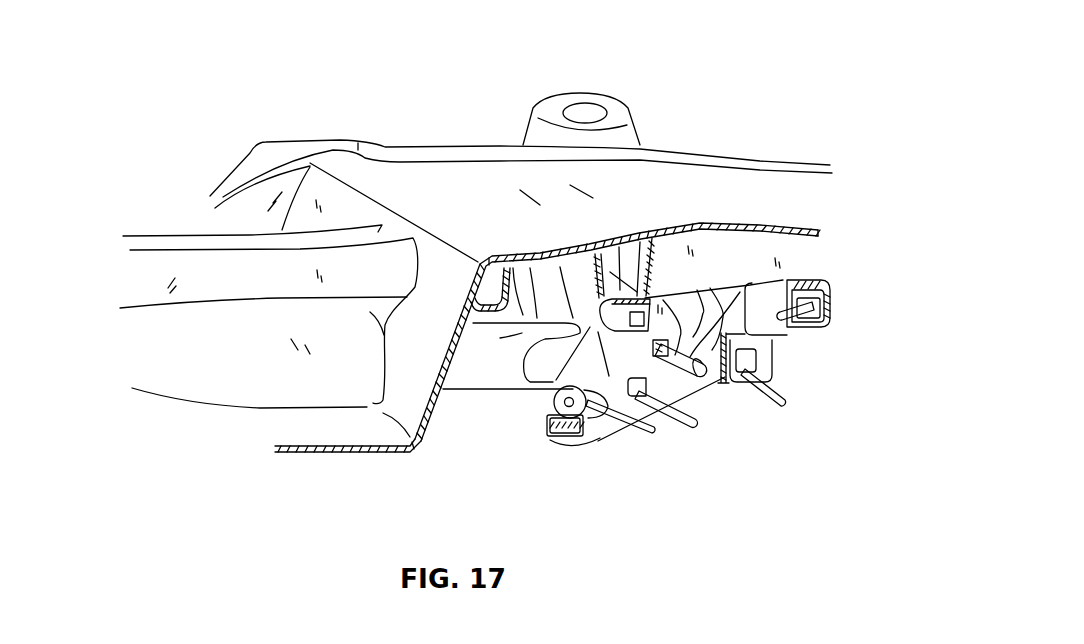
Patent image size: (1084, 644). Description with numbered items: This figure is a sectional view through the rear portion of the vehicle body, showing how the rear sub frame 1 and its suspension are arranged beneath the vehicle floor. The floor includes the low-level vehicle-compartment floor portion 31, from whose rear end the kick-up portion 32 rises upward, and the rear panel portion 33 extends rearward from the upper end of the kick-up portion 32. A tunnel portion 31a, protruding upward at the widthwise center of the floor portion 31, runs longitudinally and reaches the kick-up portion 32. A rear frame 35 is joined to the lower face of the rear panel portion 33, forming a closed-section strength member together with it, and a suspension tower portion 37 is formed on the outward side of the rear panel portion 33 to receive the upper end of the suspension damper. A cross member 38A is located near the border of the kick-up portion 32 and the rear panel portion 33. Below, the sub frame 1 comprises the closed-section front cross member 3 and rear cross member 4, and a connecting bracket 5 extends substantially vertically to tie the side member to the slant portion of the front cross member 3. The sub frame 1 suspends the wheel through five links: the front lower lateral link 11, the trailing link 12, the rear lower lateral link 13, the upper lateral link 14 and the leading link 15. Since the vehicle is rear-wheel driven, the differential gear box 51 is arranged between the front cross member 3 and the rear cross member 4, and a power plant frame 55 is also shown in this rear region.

The sub frame 1 is at (597, 429).
The front cross member 3 is at (590, 328).
The rear cross member 4 is at (785, 277).
The connecting bracket 5 is at (553, 383).
The front lower lateral link 11 is at (678, 427).
The trailing link 12 is at (643, 428).
The rear lower lateral link 13 is at (780, 378).
The upper lateral link 14 is at (677, 375).
The leading link 15 is at (797, 328).
The vehicle-compartment floor portion 31 is at (320, 433).
The tunnel portion 31a is at (207, 325).
The kick-up portion 32 is at (338, 200).
The rear panel portion 33 is at (710, 187).
The rear frame 35 is at (737, 248).
The suspension tower portion 37 is at (607, 93).
The cross member 38A is at (487, 258).
The differential gear box 51 is at (525, 381).
The power plant frame 55 is at (475, 377).